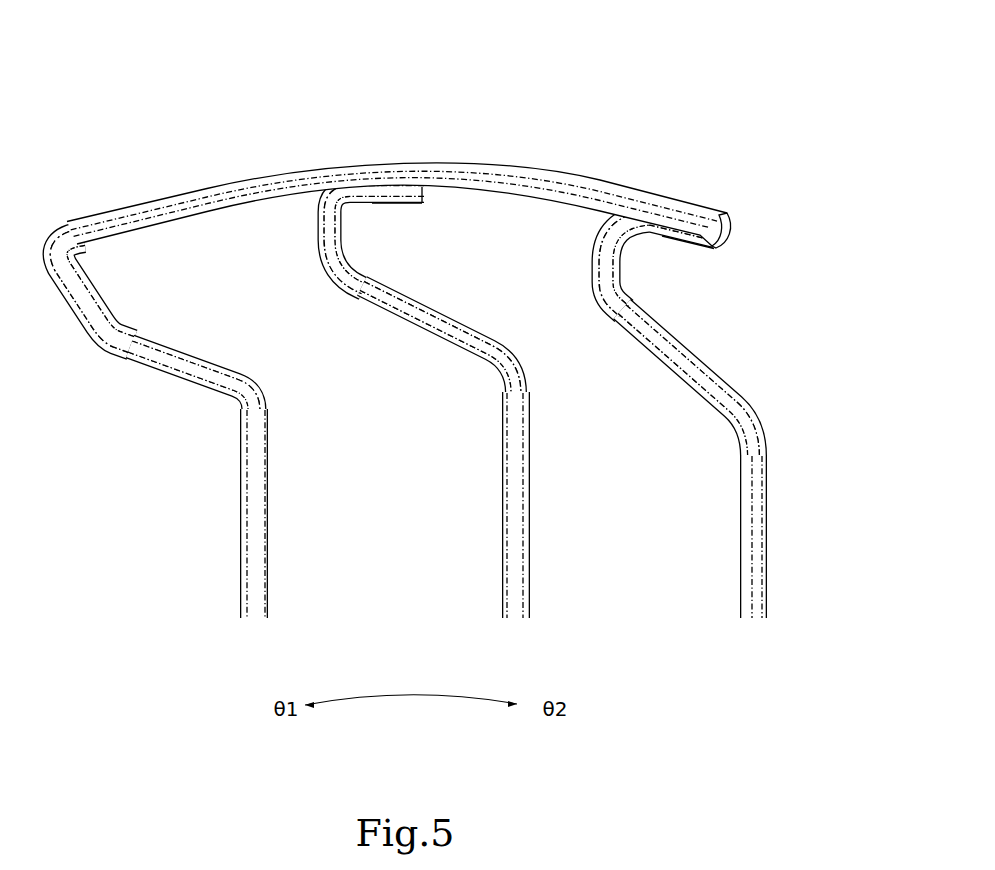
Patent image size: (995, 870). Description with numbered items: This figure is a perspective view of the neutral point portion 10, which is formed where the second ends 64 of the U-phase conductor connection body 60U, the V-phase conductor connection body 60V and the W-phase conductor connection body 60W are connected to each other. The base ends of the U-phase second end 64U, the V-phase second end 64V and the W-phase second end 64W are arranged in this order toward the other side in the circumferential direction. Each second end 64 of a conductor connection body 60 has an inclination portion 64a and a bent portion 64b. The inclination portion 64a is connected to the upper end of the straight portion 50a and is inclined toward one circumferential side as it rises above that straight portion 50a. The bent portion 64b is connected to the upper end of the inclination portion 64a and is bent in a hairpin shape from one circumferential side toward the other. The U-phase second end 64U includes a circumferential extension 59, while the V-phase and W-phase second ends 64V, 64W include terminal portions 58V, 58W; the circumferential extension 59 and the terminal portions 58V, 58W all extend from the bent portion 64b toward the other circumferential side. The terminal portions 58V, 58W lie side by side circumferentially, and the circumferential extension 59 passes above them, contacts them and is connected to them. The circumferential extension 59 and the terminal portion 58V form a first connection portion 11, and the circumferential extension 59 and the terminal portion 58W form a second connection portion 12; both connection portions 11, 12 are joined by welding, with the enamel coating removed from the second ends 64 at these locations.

The neutral point portion 10 is at (411, 314).
The first connection portion 11 is at (426, 154).
The second connection portion 12 is at (735, 216).
The circumferential extension 59 is at (220, 187).
The V-phase terminal portion 58V is at (412, 200).
The W-phase terminal portion 58W is at (693, 240).
The second end 64 is at (411, 321).
The U-phase second end 64U is at (73, 308).
The V-phase second end 64V is at (364, 290).
The W-phase second end 64W is at (670, 337).
The inclination portion 64a is at (177, 362).
The bent portion 64b is at (100, 293).
The conductor connection body 60 is at (438, 505).
The U-phase conductor connection body 60U is at (232, 565).
The V-phase conductor connection body 60V is at (497, 565).
The W-phase conductor connection body 60W is at (735, 565).
The straight portion 50a is at (258, 514).